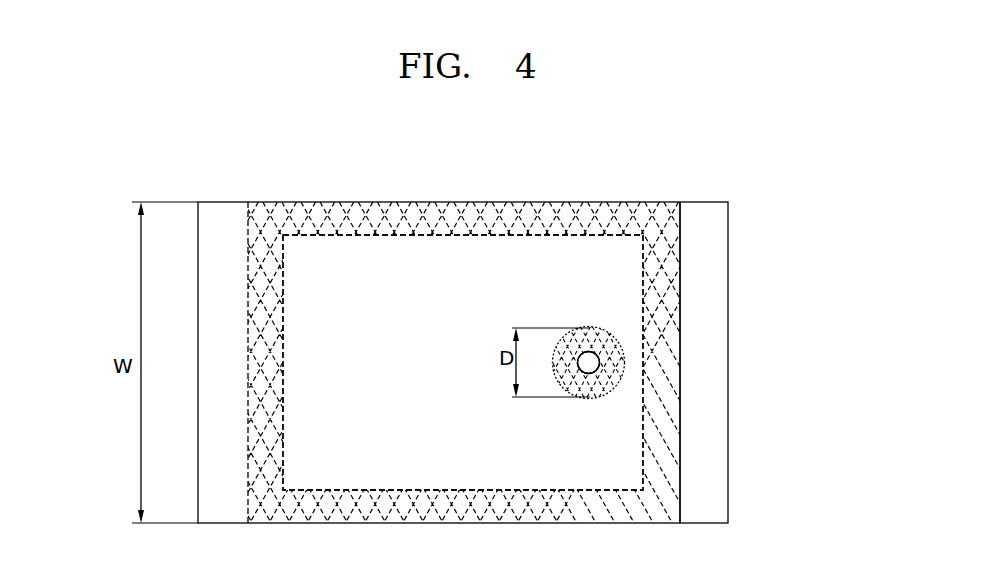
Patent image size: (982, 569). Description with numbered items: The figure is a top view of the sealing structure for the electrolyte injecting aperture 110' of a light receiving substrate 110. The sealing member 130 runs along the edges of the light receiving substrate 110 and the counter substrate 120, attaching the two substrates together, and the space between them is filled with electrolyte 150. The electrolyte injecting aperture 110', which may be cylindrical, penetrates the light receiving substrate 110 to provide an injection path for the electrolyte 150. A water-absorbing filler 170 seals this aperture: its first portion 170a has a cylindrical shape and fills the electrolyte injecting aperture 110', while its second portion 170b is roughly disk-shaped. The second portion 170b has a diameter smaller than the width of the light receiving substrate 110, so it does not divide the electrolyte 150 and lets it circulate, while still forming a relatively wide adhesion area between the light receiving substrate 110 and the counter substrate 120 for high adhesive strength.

The light receiving substrate 110 is at (463, 330).
The electrolyte injecting aperture 110' is at (692, 314).
The counter substrate 120 is at (712, 305).
The sealing member 130 is at (400, 215).
The electrolyte 150 is at (469, 265).
The water-absorbing filler 170 is at (689, 365).
The first portion 170a is at (600, 363).
The second portion 170b is at (612, 384).